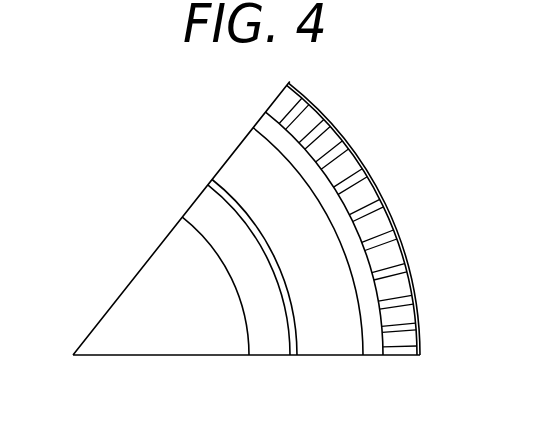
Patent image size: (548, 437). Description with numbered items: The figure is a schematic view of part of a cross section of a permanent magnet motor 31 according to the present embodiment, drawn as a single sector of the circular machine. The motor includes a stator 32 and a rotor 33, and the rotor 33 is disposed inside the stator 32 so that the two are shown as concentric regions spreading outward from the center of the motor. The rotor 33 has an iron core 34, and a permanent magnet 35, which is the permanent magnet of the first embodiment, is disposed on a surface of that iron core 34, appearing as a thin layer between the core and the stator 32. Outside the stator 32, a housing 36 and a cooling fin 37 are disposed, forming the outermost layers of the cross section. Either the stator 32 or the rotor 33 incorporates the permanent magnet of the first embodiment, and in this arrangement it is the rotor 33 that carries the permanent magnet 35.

The permanent magnet motor 31 is at (265, 243).
The stator 32 is at (248, 119).
The rotor 33 is at (190, 259).
The iron core 34 is at (174, 242).
The permanent magnet 35 is at (207, 205).
The housing 36 is at (367, 342).
The cooling fin 37 is at (402, 307).